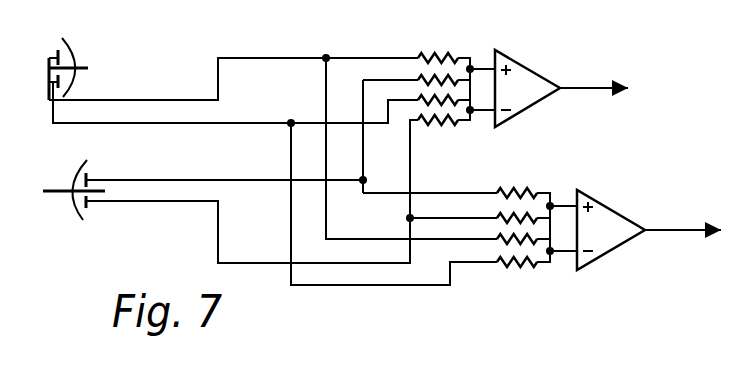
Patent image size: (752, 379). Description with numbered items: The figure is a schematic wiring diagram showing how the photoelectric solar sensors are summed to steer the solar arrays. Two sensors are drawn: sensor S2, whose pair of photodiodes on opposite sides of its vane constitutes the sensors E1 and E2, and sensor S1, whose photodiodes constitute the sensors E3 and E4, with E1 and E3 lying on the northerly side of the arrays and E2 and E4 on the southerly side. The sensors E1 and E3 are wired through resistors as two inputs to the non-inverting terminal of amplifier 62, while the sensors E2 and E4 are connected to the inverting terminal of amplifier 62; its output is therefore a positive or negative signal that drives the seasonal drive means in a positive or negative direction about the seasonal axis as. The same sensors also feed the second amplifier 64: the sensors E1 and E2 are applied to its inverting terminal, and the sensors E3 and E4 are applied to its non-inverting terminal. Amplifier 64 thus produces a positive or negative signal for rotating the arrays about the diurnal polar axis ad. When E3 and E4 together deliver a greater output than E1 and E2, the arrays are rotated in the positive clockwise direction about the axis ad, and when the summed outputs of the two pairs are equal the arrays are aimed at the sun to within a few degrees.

The sensor E1 is at (68, 48).
The sensor E2 is at (68, 84).
The sensor E3 is at (78, 174).
The sensor E4 is at (74, 204).
The sensor S1 is at (76, 160).
The sensor S2 is at (94, 61).
The amplifier 62 is at (535, 72).
The amplifier 64 is at (611, 205).
The seasonal axis as is at (518, 73).
The diurnal axis ad is at (620, 232).